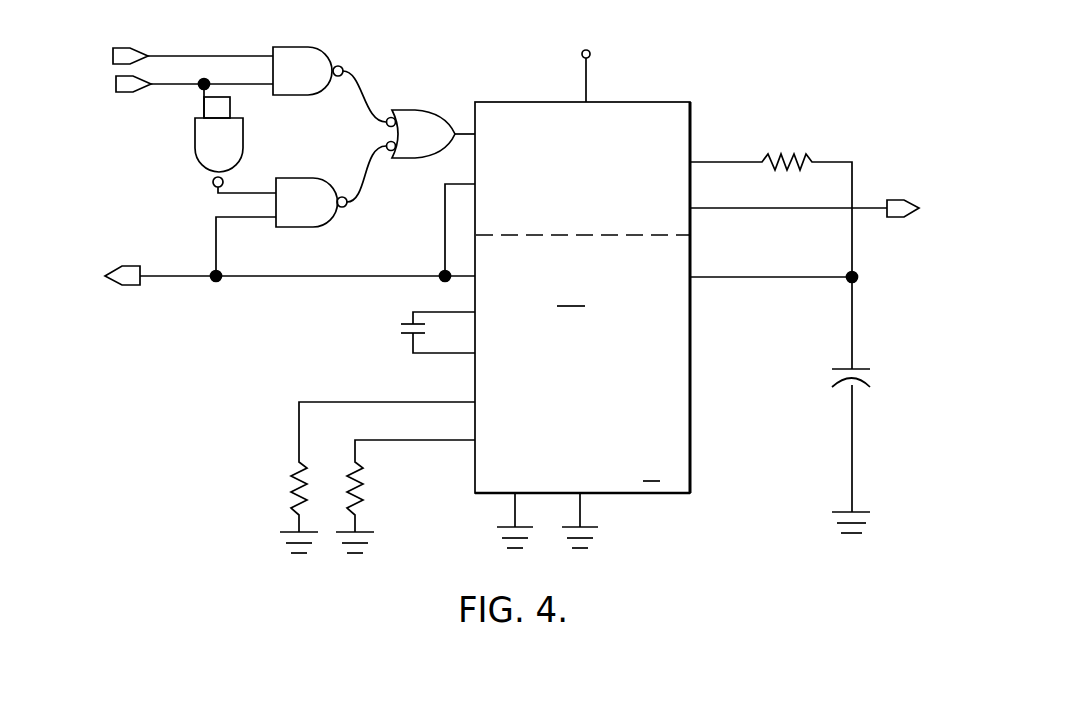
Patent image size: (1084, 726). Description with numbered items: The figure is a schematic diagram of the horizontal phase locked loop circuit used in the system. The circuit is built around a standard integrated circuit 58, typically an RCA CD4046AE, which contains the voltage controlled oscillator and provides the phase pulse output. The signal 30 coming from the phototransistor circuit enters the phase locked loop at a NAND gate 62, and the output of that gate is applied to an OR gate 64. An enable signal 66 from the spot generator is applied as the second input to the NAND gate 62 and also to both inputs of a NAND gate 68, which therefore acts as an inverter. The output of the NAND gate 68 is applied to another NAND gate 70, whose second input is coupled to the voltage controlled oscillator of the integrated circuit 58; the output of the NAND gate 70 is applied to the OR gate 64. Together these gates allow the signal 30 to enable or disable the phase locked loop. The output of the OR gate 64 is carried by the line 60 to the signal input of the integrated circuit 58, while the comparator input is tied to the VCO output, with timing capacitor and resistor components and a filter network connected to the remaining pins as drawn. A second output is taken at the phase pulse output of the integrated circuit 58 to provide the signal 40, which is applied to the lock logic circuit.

The signal 30 is at (160, 86).
The signal 40 is at (854, 210).
The integrated circuit 58 is at (582, 269).
The signal input line 60 is at (467, 134).
The NAND gate 62 is at (327, 48).
The OR gate 64 is at (420, 110).
The enable signal 66 is at (183, 56).
The NAND gate 68 is at (242, 156).
The NAND gate 70 is at (315, 179).